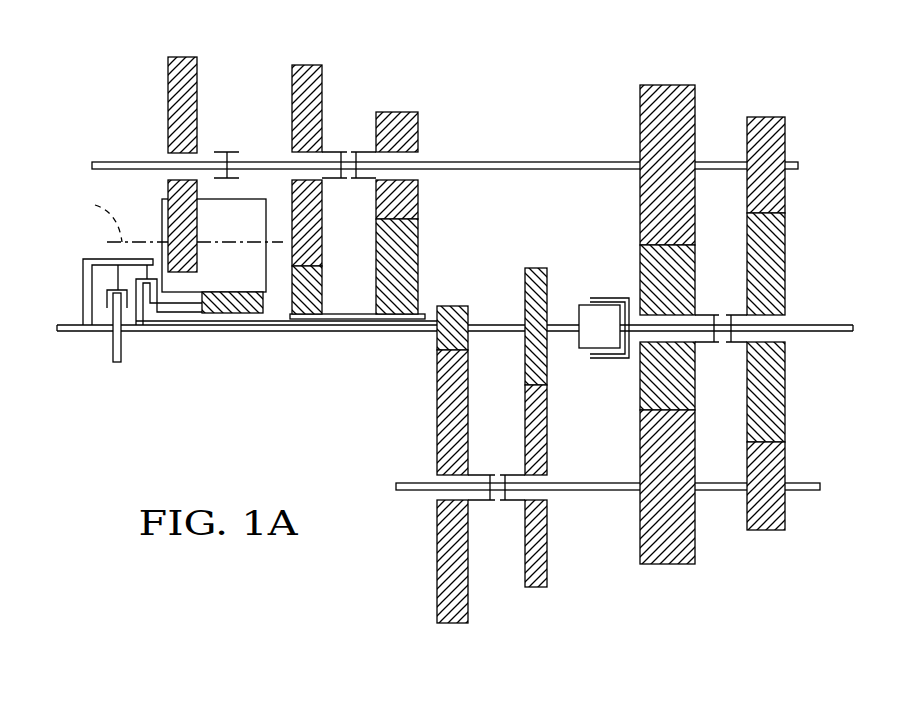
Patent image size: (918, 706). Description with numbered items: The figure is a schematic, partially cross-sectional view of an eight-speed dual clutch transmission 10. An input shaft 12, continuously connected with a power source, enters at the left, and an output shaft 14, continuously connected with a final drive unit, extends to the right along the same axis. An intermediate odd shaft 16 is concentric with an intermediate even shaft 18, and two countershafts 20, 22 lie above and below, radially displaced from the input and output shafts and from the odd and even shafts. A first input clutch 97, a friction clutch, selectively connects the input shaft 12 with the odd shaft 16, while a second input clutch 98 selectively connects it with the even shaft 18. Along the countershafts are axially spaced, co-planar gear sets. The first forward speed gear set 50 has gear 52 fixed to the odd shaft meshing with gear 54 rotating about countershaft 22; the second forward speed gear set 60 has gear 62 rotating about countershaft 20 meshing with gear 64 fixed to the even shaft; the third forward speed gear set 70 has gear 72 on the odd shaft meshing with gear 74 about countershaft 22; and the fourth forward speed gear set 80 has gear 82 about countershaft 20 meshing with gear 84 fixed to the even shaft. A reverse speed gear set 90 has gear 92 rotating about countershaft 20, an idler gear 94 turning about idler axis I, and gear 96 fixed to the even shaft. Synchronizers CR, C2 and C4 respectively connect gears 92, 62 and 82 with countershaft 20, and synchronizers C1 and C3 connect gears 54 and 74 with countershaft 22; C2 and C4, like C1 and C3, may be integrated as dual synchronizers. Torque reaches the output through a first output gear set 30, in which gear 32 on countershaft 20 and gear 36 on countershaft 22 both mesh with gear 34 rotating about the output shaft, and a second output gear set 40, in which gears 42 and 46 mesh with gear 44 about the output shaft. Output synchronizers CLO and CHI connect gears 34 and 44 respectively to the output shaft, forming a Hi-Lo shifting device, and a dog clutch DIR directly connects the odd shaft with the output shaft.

The multi-speed dual clutch transmission 10 is at (108, 70).
The input shaft 12 is at (68, 332).
The output shaft 14 is at (818, 333).
The intermediate shaft (odd shaft) 16 is at (172, 332).
The intermediate shaft (even shaft) 18 is at (197, 327).
The countershaft 20 is at (505, 162).
The countershaft 22 is at (413, 490).
The first output gear set 30 is at (786, 315).
The gear 32 is at (785, 137).
The gear 34 is at (787, 260).
The gear 36 is at (785, 455).
The second output gear set 40 is at (646, 328).
The gear 42 is at (640, 128).
The gear 44 is at (640, 247).
The gear 46 is at (642, 535).
The first forward speed gear set 50 is at (444, 457).
The gear 52 is at (468, 307).
The gear 54 is at (438, 410).
The second forward speed gear set 60 is at (297, 195).
The gear 62 is at (292, 100).
The gear 64 is at (322, 297).
The third forward speed gear set 70 is at (563, 420).
The gear 72 is at (538, 268).
The gear 74 is at (548, 417).
The fourth forward speed gear set 80 is at (424, 178).
The gear 82 is at (418, 133).
The gear 84 is at (420, 252).
The reverse speed gear set 90 is at (188, 147).
The gear 92 is at (197, 82).
The idler gear 94 is at (240, 278).
The gear 96 is at (262, 295).
The first input clutch 97 is at (105, 315).
The second input clutch 98 is at (136, 302).
The torque-transmitting mechanism CR is at (232, 147).
The torque-transmitting mechanism C1 is at (478, 463).
The torque-transmitting mechanism C2 is at (334, 145).
The torque-transmitting mechanism C3 is at (502, 463).
The torque-transmitting mechanism C4 is at (353, 145).
The direct drive torque-transmitting mechanism DIR is at (583, 300).
The second output torque-transmitting mechanism CHI is at (720, 303).
The first output torque-transmitting mechanism CLO is at (723, 352).